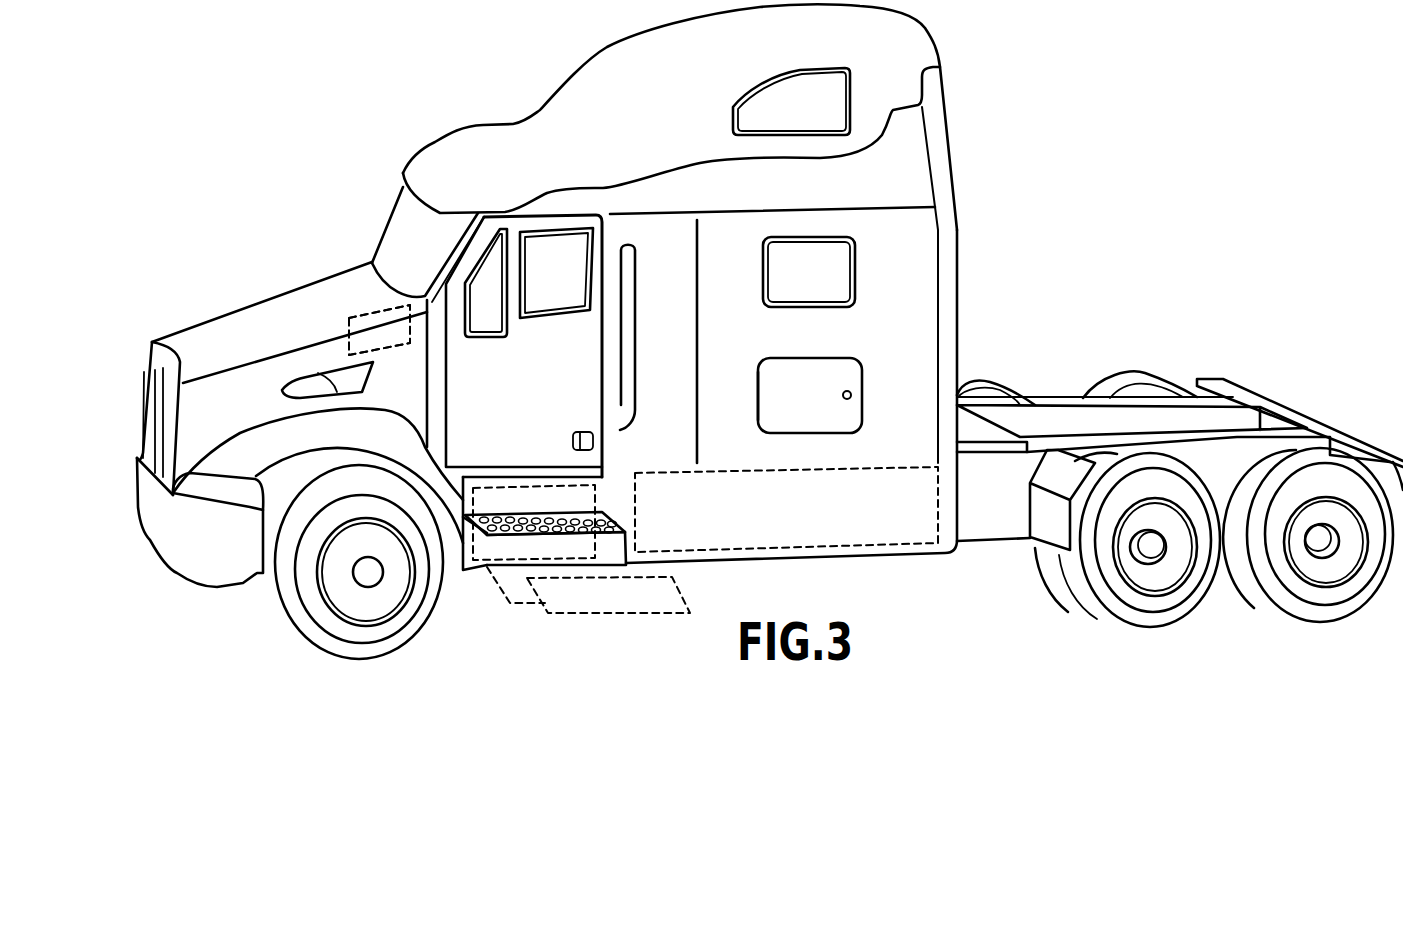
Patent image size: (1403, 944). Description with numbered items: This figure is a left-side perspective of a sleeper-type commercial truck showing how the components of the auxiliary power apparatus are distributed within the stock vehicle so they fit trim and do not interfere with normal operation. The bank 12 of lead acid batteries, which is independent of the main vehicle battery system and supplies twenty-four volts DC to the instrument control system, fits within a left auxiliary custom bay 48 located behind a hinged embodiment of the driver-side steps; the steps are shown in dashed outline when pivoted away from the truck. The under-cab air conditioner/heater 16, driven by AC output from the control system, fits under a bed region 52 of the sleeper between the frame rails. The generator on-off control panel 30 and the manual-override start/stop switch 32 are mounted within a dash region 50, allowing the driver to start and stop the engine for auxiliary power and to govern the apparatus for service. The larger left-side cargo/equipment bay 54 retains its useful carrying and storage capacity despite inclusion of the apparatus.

The bank of lead acid batteries 12 is at (537, 474).
The under-cab air conditioner/heater 16 is at (898, 553).
The generator on-off control panel 30 is at (326, 328).
The manual-override start/stop switch 32 is at (349, 316).
The left auxiliary custom bay 48 is at (620, 517).
The dash region 50 is at (364, 294).
The bed region 52 is at (829, 385).
The left-side cargo/equipment bay 54 is at (758, 388).